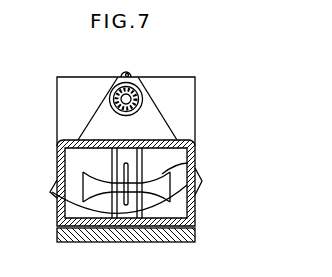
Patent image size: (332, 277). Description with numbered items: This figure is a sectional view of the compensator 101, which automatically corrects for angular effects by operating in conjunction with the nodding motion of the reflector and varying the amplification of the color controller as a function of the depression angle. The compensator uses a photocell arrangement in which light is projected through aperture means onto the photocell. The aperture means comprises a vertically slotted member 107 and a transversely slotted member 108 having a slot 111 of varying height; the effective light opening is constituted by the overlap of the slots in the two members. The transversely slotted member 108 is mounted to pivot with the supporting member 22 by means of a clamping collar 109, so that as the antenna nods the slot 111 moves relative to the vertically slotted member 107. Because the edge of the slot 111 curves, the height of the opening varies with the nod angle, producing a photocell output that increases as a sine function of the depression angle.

The supporting member 22 is at (114, 91).
The compensator 101 is at (194, 142).
The vertically slotted member 107 is at (112, 157).
The transversely slotted member 108 is at (93, 126).
The clamping collar 109 is at (137, 83).
The slot 111 is at (193, 152).